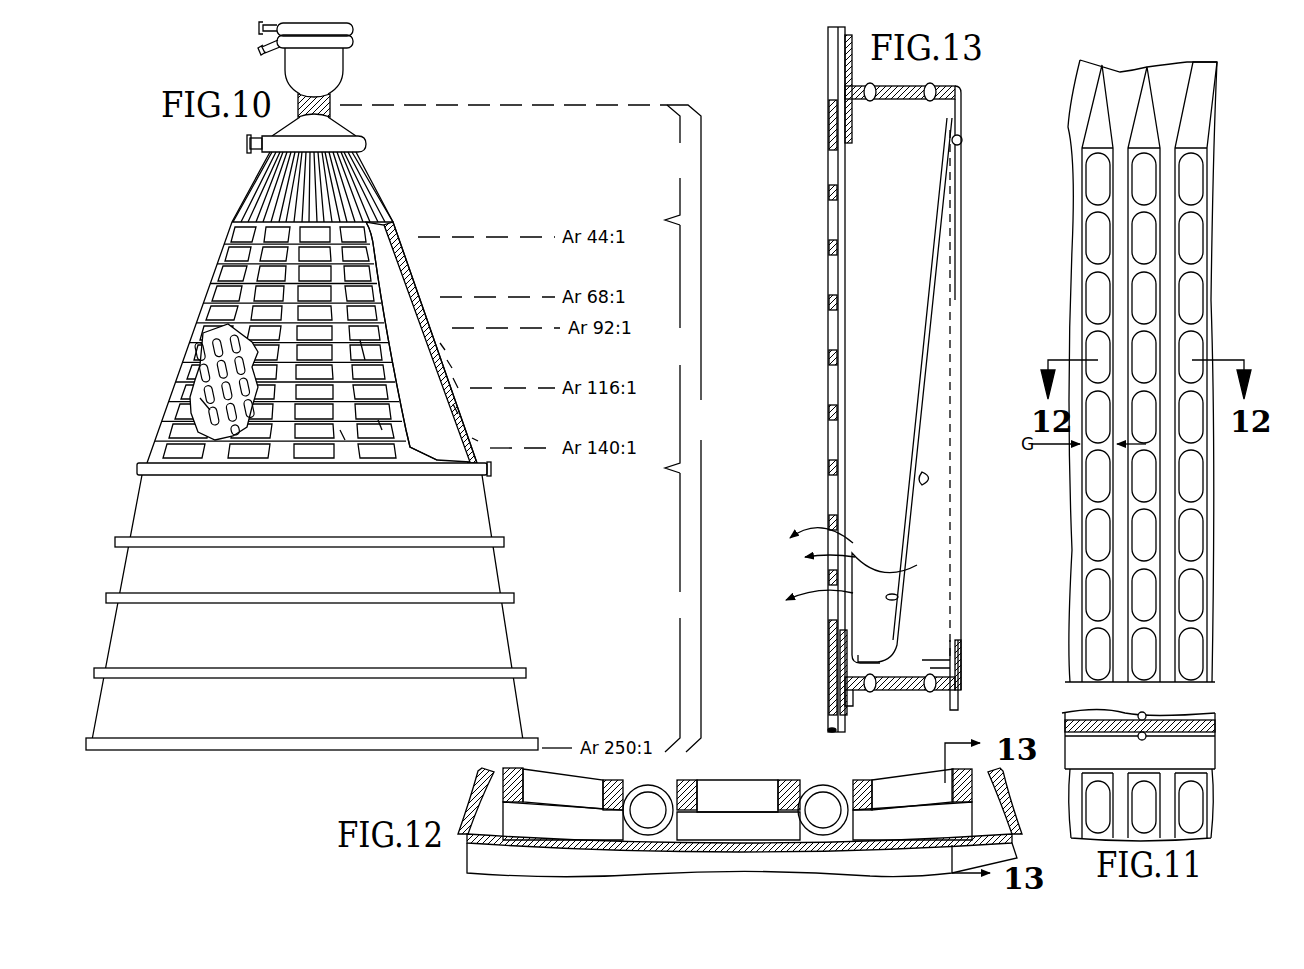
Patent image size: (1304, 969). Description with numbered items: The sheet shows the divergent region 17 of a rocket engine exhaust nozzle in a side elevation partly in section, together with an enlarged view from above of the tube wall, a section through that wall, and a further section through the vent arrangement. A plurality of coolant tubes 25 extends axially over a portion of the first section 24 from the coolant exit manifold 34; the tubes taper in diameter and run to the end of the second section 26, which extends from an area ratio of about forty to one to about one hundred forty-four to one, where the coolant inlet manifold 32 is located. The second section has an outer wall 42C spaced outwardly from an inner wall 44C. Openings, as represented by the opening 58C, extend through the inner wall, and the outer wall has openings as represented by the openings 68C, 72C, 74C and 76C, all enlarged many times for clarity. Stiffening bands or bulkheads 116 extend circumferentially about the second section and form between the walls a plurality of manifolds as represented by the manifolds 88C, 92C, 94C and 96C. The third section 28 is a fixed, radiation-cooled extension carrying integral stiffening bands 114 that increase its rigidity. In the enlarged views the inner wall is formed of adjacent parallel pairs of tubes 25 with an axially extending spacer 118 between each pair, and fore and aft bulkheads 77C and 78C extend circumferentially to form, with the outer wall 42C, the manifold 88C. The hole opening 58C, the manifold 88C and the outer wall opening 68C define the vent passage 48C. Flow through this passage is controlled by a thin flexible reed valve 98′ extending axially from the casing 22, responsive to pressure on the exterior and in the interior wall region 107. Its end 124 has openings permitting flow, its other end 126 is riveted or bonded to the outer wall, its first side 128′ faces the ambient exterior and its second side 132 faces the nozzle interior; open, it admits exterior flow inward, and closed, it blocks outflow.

In FIG. 10, the divergent region 17 is at (690, 428).
In FIG. 10, the casing 22 is at (412, 230).
In FIG. 13, the casing 22 is at (824, 226).
In FIG. 12, the casing 22 is at (742, 838).
In FIG. 10, the first section 24 is at (679, 165).
In FIG. 10, the tubes 25 is at (370, 196).
In FIG. 13, the tubes 25 is at (850, 282).
In FIG. 12, the tubes 25 is at (655, 786).
In FIG. 11, the tubes 25 is at (1116, 94).
In FIG. 10, the second section 26 is at (679, 349).
In FIG. 10, the third section 28 is at (678, 612).
In FIG. 10, the coolant inlet manifold 32 is at (490, 474).
In FIG. 10, the coolant exit manifold 34 is at (370, 140).
In FIG. 10, the outer wall 42C is at (455, 354).
In FIG. 13, the outer wall 42C is at (958, 646).
In FIG. 11, the outer wall 42C is at (1107, 716).
In FIG. 10, the inner wall 44C is at (228, 324).
In FIG. 13, the inner wall 44C is at (827, 660).
In FIG. 13, the vent passage 48C is at (860, 560).
In FIG. 10, the opening 58C is at (208, 403).
In FIG. 13, the opening 58C is at (831, 326).
In FIG. 12, the opening 58C is at (590, 782).
In FIG. 11, the opening 58C is at (1094, 532).
In FIG. 10, the opening 68C is at (222, 277).
In FIG. 13, the opening 68C is at (960, 570).
In FIG. 10, the opening 72C is at (355, 367).
In FIG. 10, the opening 74C is at (365, 388).
In FIG. 10, the opening 76C is at (378, 407).
In FIG. 13, the bulkhead 77C is at (948, 86).
In FIG. 13, the bulkhead 78C is at (898, 692).
In FIG. 12, the bulkhead 78C is at (838, 879).
In FIG. 11, the bulkhead 78C is at (1193, 708).
In FIG. 10, the manifold 88C is at (442, 343).
In FIG. 13, the manifold 88C is at (910, 226).
In FIG. 10, the manifold 92C is at (449, 363).
In FIG. 10, the manifold 94C is at (455, 380).
In FIG. 10, the manifold 96C is at (455, 407).
In FIG. 13, the reed valve 98′ is at (946, 400).
In FIG. 13, the wall region 107 is at (813, 419).
In FIG. 10, the stiffening bands 114 is at (525, 670).
In FIG. 10, the stiffening bands or bulkheads 116 is at (473, 440).
In FIG. 13, the spacer 118 is at (843, 357).
In FIG. 12, the spacer 118 is at (945, 770).
In FIG. 11, the spacer 118 is at (1091, 325).
In FIG. 13, the end 124 is at (871, 662).
In FIG. 13, the other end 126 is at (961, 148).
In FIG. 13, the first side 128′ is at (920, 479).
In FIG. 13, the second side 132 is at (898, 597).